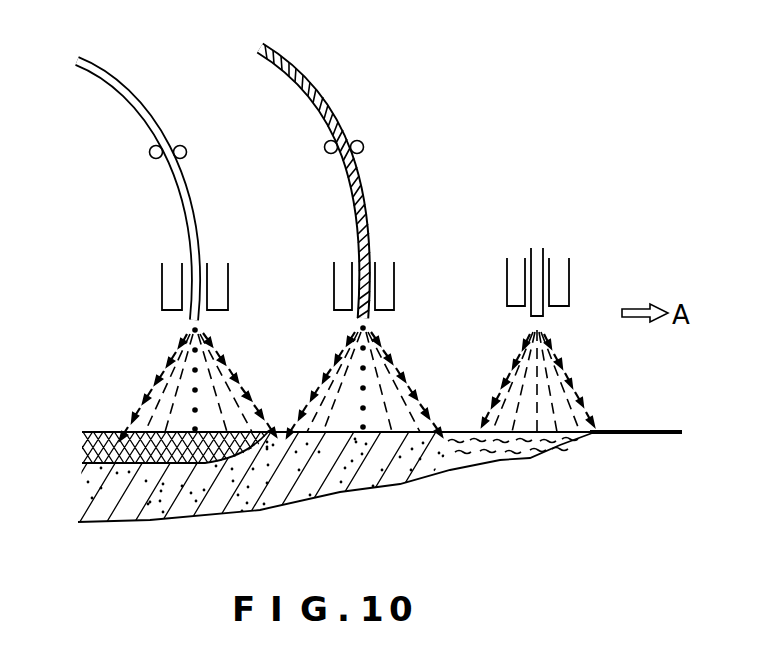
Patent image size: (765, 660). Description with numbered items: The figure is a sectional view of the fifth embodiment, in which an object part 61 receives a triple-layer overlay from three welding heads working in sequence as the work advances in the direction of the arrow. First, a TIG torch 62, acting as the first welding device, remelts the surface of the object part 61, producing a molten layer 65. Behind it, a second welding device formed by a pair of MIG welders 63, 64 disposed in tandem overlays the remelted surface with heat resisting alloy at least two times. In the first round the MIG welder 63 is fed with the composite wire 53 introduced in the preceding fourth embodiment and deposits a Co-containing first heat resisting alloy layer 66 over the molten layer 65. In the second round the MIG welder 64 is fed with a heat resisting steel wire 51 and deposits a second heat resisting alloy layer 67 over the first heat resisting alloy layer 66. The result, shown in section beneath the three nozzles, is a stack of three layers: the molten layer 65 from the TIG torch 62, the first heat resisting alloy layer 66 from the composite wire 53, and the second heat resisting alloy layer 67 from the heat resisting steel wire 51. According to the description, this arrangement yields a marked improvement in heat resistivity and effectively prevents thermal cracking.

The heat resisting steel wire 51 is at (196, 234).
The composite wire 53 is at (333, 112).
The object part 61 is at (600, 405).
The TIG torch 62 is at (575, 270).
The MIG welder 63 is at (382, 240).
The MIG welder 64 is at (152, 260).
The molten layer 65 is at (563, 464).
The first heat resisting alloy layer 66 is at (341, 503).
The second heat resisting alloy layer 67 is at (92, 430).